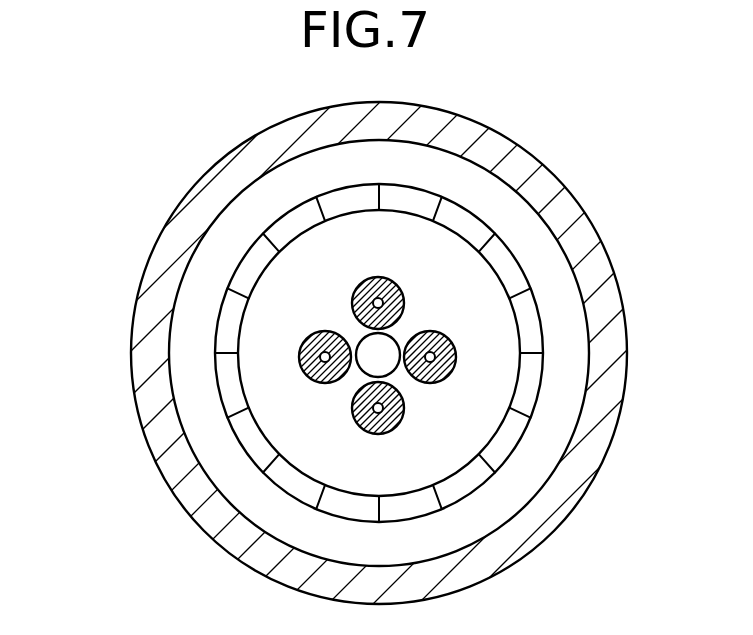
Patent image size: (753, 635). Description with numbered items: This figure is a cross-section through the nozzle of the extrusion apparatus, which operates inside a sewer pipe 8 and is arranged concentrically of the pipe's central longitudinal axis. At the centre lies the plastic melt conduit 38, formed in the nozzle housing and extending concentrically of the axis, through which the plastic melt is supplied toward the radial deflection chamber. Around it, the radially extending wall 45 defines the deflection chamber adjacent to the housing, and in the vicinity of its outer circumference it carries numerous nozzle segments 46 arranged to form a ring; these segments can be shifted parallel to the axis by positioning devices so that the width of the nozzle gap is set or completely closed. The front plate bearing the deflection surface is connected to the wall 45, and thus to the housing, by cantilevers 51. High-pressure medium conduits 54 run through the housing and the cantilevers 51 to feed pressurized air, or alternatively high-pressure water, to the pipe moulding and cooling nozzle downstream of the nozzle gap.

The sewer pipe 8 is at (610, 358).
The nozzle segments 46 is at (230, 380).
The wall 45 is at (270, 322).
The plastic melt conduit 38 is at (390, 363).
The high-pressure medium conduits 54 is at (375, 303).
The cantilevers 51 is at (400, 292).